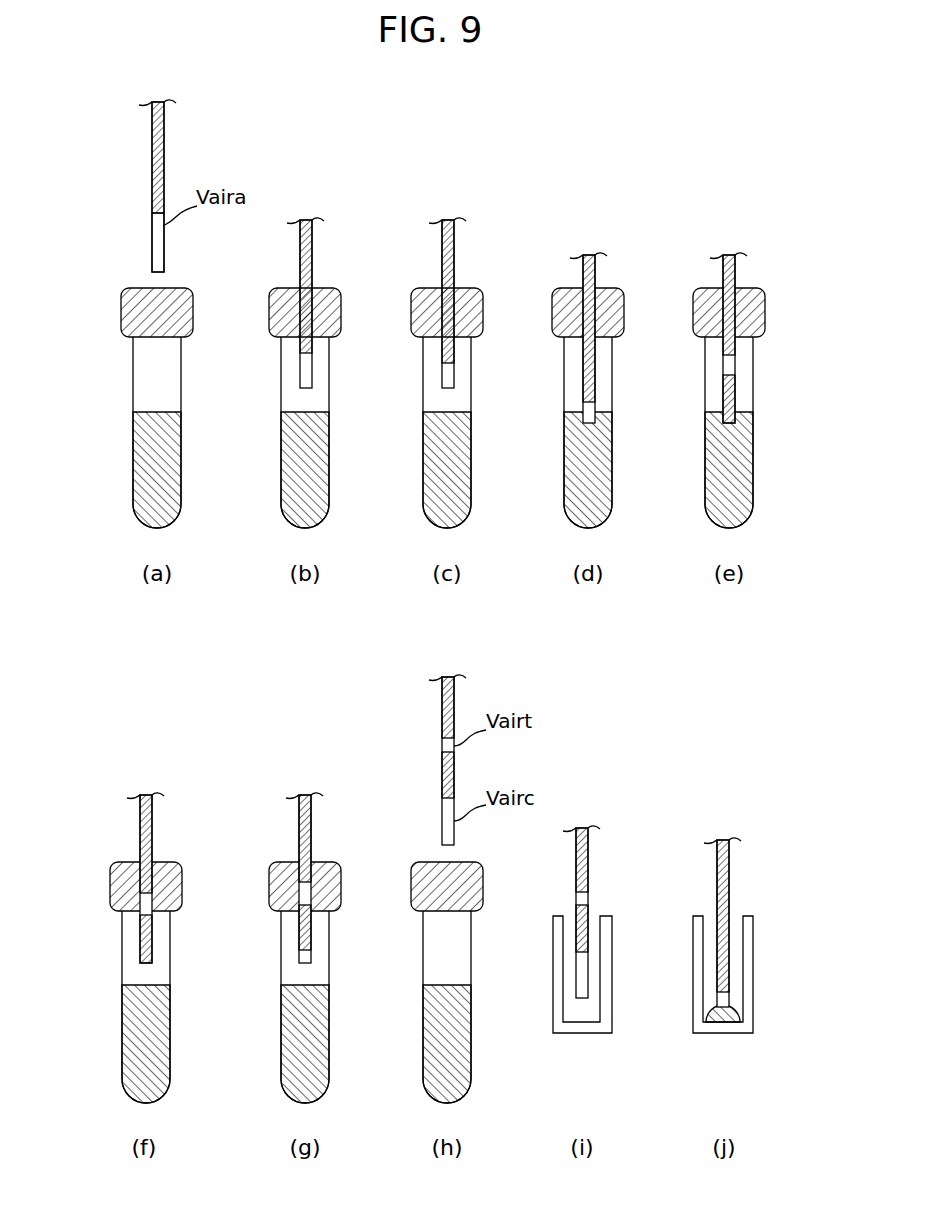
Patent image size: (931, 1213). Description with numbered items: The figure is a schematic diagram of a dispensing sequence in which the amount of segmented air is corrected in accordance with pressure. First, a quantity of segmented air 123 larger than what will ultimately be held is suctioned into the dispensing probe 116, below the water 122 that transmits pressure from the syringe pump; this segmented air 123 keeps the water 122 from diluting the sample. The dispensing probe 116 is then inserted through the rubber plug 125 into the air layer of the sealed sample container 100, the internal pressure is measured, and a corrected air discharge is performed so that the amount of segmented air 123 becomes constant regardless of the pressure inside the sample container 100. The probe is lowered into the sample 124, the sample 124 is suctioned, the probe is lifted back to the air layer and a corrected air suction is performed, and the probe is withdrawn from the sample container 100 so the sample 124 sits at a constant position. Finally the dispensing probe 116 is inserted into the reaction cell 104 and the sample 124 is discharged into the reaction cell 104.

The dispensing probe 116 is at (152, 148).
The water 122 is at (152, 195).
The segmented air 123 is at (152, 243).
The rubber plug 125 is at (183, 290).
The sample container 100 is at (133, 383).
The sample 124 is at (140, 478).
The reaction cell 104 is at (753, 969).